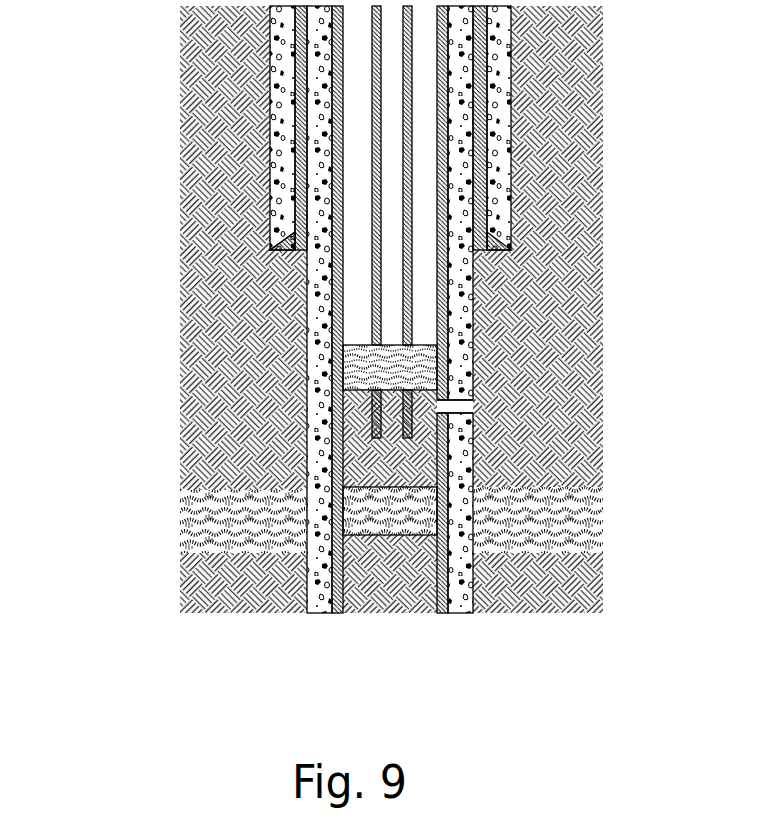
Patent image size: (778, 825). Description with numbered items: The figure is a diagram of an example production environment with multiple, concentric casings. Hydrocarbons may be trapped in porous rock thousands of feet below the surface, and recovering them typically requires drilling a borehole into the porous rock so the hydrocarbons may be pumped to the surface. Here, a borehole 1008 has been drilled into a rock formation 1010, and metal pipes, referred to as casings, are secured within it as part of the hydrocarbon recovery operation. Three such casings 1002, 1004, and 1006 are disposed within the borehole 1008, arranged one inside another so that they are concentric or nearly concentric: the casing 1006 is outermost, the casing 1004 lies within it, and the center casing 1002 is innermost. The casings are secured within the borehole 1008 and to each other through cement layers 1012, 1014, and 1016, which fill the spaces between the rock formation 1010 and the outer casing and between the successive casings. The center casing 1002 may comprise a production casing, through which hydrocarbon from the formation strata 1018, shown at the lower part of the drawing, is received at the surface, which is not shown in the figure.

The casing 1002 is at (375, 337).
The casing 1004 is at (335, 213).
The casing 1006 is at (300, 60).
The borehole 1008 is at (507, 203).
The rock formation 1010 is at (568, 72).
The cement layer 1012 is at (353, 283).
The cement layer 1014 is at (313, 126).
The cement layer 1016 is at (283, 22).
The formation strata 1018 is at (570, 447).